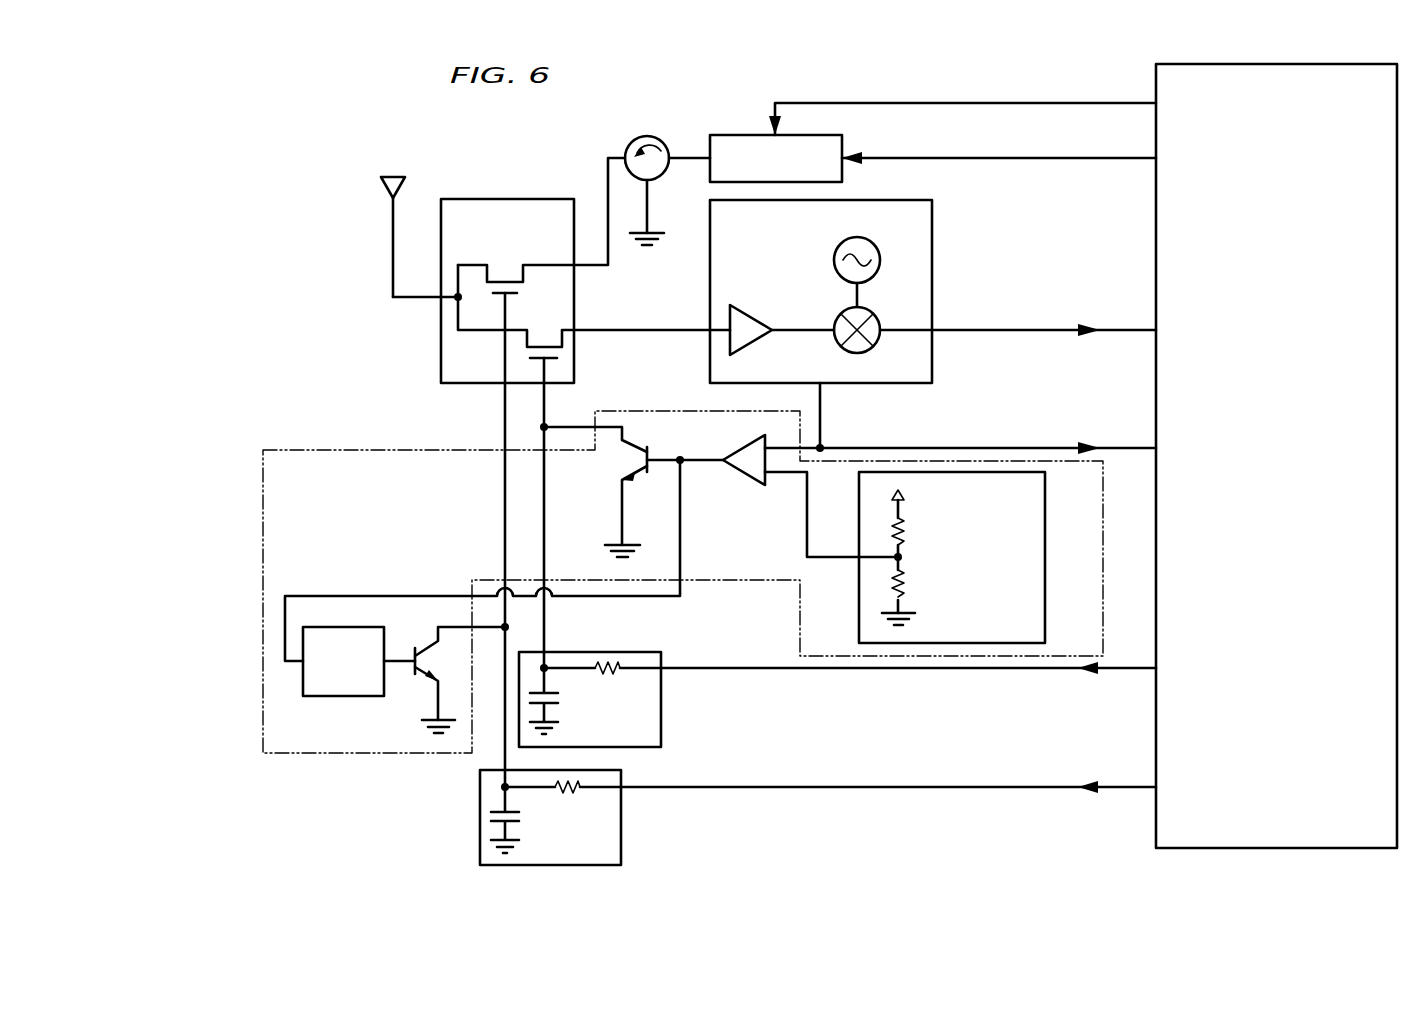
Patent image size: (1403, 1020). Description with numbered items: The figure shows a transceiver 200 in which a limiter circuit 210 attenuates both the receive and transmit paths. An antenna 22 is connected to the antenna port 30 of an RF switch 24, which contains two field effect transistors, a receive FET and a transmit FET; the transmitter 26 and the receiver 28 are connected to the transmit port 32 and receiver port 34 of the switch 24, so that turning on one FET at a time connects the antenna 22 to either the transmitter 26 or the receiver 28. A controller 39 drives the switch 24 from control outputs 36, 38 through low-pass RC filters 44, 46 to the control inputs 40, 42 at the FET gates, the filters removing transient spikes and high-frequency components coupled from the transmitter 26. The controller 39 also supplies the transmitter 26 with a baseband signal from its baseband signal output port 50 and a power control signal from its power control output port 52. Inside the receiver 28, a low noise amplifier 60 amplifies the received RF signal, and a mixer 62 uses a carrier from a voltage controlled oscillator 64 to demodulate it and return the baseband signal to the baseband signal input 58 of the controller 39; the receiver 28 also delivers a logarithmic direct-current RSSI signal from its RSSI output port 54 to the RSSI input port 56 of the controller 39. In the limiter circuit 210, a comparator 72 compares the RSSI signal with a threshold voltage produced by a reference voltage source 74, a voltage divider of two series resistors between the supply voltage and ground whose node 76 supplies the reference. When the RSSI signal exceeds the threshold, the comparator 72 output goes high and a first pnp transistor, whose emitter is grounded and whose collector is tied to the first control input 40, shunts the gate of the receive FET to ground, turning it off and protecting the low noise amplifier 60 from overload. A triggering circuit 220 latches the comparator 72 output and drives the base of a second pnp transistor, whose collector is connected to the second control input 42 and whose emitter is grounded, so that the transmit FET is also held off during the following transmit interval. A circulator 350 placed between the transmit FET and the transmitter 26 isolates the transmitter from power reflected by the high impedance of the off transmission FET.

The antenna 22 is at (393, 175).
The switch 24 is at (507, 198).
The RF transmitter 26 is at (747, 135).
The RF receiver 28 is at (710, 222).
The antenna port 30 is at (441, 300).
The transmit port 32 is at (575, 268).
The receiver port 34 is at (575, 333).
The control output 36 is at (1153, 673).
The control output 38 is at (1153, 793).
The controller 39 is at (1278, 849).
The control input 40 is at (545, 386).
The control input 42 is at (504, 385).
The low-pass RC filter 44 is at (662, 716).
The low-pass RC filter 46 is at (622, 831).
The baseband signal output port 50 is at (1153, 163).
The power control output port 52 is at (1153, 106).
The RSSI output port 54 is at (821, 386).
The RSSI input port 56 is at (1153, 451).
The baseband signal input line 58 is at (1153, 333).
The low noise amplifier 60 is at (745, 305).
The mixer 62 is at (835, 321).
The oscillator 64 is at (868, 238).
The comparator 72 is at (755, 487).
The reference voltage source 74 is at (1046, 547).
The node 76 is at (901, 560).
The transceiver 200 is at (320, 806).
The limiter circuit 210 is at (736, 581).
The triggering circuit 220 is at (337, 697).
The circulator 350 is at (628, 145).